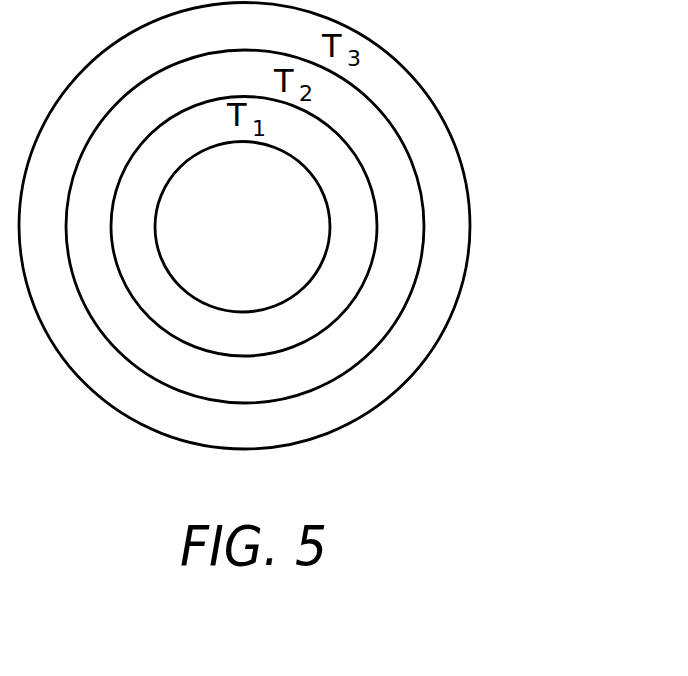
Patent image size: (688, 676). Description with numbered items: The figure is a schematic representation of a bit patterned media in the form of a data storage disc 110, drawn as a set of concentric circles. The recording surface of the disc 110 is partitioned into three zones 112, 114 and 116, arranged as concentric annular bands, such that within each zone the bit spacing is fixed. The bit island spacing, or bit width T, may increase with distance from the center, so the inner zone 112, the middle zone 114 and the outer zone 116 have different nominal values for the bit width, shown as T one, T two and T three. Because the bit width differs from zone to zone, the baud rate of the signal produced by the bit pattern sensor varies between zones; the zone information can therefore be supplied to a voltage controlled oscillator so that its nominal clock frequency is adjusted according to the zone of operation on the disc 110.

The data storage disc 110 is at (318, 226).
The first zone 112 is at (363, 233).
The second zone 114 is at (397, 287).
The third zone 116 is at (417, 340).